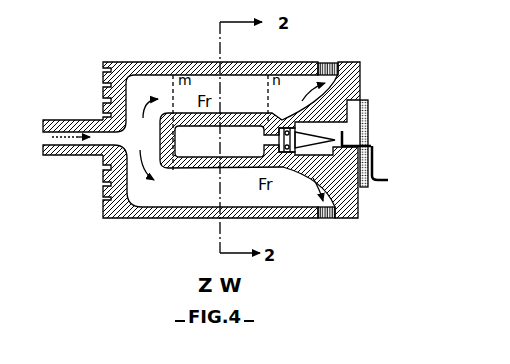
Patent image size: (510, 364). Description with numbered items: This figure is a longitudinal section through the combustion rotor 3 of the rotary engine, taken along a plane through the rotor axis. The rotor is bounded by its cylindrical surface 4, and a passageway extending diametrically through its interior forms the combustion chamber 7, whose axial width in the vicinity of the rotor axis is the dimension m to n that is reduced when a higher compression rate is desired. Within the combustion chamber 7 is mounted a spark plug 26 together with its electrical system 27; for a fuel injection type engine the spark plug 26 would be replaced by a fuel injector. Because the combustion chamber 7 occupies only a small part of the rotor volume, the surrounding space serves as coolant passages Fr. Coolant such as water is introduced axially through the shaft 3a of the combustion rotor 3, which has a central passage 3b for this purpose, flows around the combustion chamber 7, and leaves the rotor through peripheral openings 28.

The combustion rotor 3 is at (197, 207).
The shaft 3a is at (75, 127).
The central passage 3b is at (50, 147).
The cylindrical surface 4 is at (178, 72).
The combustion chamber 7 is at (250, 150).
The spark plug 26 is at (312, 142).
The electrical system 27 is at (377, 173).
The peripheral openings 28 is at (330, 65).